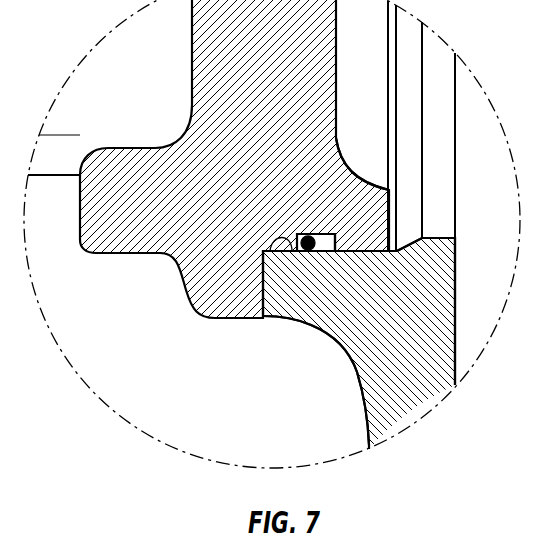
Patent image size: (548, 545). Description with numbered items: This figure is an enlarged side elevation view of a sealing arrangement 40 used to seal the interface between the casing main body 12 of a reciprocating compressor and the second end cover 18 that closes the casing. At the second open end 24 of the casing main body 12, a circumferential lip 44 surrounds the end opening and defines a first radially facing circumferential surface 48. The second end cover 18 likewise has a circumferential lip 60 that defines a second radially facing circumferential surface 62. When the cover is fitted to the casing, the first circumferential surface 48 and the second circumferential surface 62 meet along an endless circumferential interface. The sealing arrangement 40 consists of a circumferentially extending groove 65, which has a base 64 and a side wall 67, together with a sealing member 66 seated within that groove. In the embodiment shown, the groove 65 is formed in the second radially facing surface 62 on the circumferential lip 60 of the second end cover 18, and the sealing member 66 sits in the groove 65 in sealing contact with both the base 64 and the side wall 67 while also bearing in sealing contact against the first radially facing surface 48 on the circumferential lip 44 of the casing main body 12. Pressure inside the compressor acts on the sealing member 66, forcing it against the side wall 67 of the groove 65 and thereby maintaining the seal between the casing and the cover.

The casing main body 12 is at (368, 428).
The second end cover 18 is at (192, 92).
The second open end 24 is at (347, 358).
The sealing arrangement 40 is at (352, 150).
The circumferential lip 44 is at (310, 317).
The first radially facing circumferential surface 48 is at (277, 251).
The circumferential lip 60 is at (357, 169).
The second radially facing circumferential surface 62 is at (374, 254).
The base 64 is at (313, 251).
The circumferentially extending groove 65 is at (328, 232).
The sealing member 66 is at (304, 236).
The side wall 67 is at (268, 238).